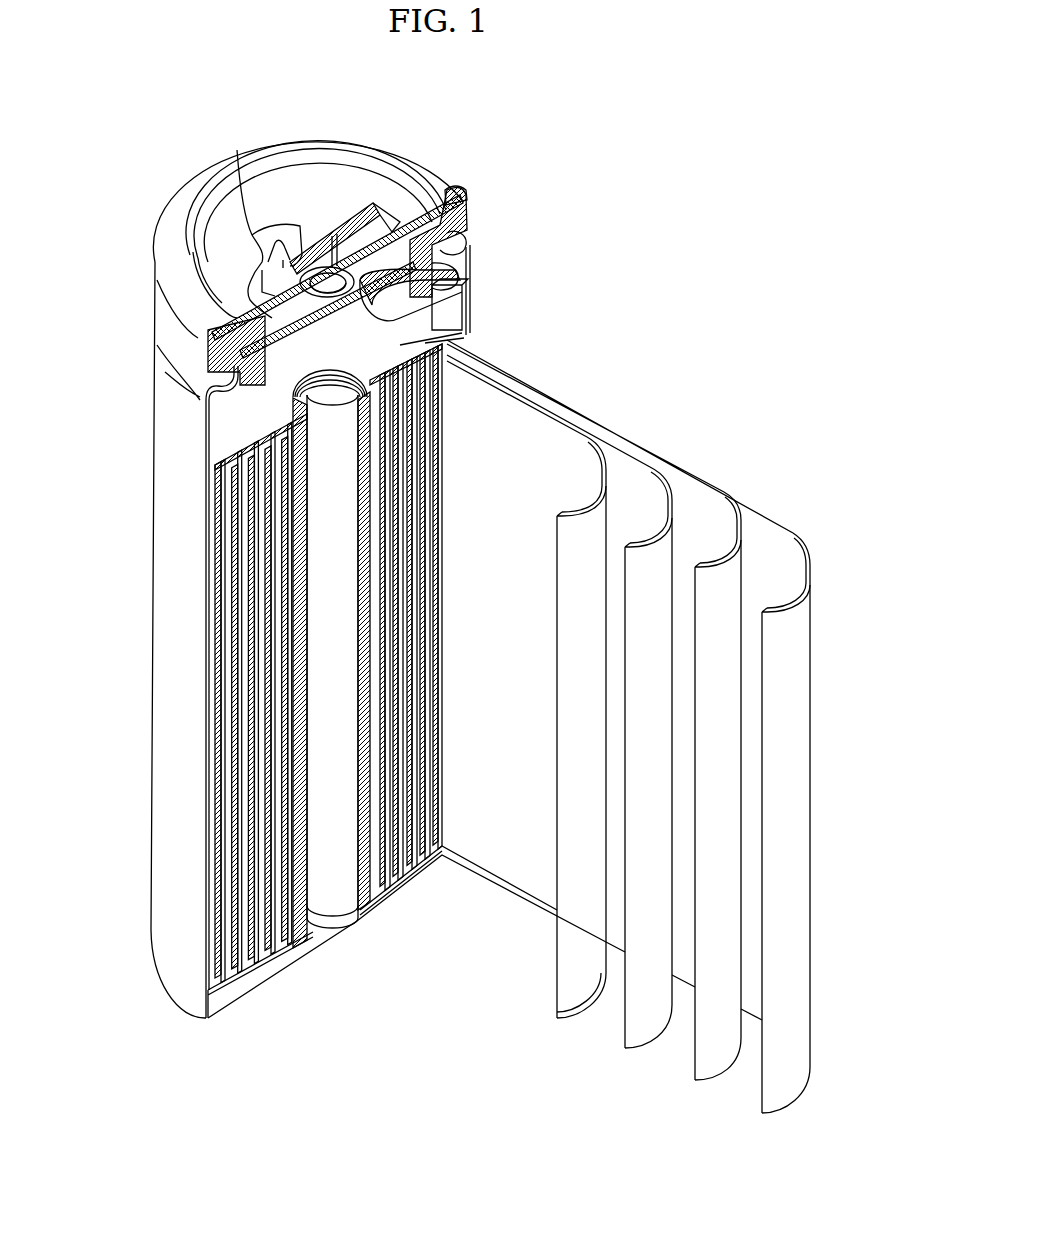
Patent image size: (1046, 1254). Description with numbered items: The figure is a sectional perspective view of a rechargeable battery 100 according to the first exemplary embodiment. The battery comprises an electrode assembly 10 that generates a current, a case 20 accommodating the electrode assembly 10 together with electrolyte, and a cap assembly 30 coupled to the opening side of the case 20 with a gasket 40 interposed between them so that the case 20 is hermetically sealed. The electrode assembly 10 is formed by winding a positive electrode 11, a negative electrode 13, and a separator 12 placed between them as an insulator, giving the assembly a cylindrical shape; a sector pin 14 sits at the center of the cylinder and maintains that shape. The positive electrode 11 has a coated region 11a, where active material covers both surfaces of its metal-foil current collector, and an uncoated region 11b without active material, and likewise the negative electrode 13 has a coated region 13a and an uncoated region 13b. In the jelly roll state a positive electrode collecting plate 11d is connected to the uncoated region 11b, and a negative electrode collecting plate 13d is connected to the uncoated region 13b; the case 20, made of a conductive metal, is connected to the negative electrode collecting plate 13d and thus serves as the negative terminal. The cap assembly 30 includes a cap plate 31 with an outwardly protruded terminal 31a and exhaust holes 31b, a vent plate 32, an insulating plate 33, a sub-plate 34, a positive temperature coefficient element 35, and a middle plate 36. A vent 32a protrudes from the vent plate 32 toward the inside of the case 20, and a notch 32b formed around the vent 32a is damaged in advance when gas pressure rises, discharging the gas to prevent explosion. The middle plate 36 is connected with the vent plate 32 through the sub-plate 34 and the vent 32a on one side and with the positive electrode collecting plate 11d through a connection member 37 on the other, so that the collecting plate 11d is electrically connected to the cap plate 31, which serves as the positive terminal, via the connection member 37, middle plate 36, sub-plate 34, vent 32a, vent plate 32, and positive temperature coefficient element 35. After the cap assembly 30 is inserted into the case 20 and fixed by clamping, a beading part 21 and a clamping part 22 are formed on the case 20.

The rechargeable battery 100 is at (393, 79).
The electrode assembly 10 is at (358, 692).
The positive electrode 11 is at (748, 734).
The coated region 11a is at (737, 577).
The uncoated region 11b is at (690, 477).
The positive electrode collecting plate 11d is at (222, 445).
The separator 12 is at (643, 1033).
The negative electrode 13 is at (565, 790).
The coated region 13a is at (557, 983).
The uncoated region 13b is at (572, 1020).
The negative electrode collecting plate 13d is at (267, 967).
The sector pin 14 is at (335, 890).
The case 20 is at (151, 578).
The beading part 21 is at (213, 383).
The clamping part 22 is at (197, 343).
The cap assembly 30 is at (337, 190).
The cap plate 31 is at (417, 203).
The terminal 31a is at (292, 213).
The exhaust holes 31b is at (235, 265).
The vent plate 32 is at (468, 210).
The vent 32a is at (290, 220).
The notch 32b is at (327, 277).
The insulating plate 33 is at (463, 247).
The sub-plate 34 is at (453, 323).
The positive temperature coefficient element 35 is at (466, 197).
The middle plate 36 is at (458, 265).
The connection member 37 is at (455, 298).
The gasket 40 is at (467, 223).